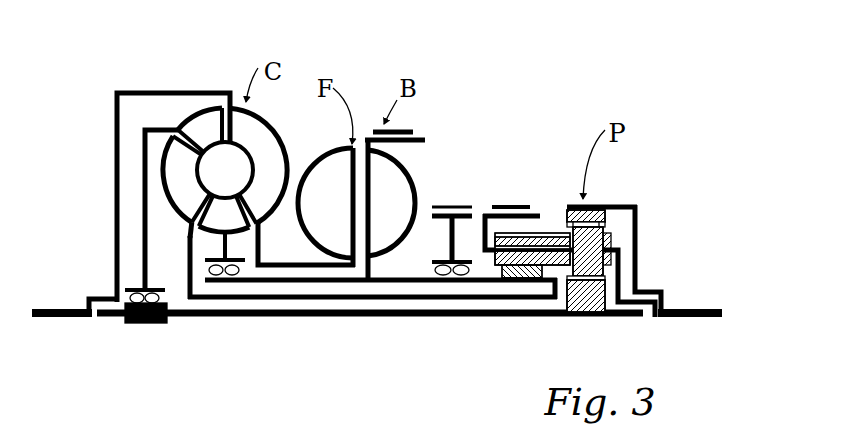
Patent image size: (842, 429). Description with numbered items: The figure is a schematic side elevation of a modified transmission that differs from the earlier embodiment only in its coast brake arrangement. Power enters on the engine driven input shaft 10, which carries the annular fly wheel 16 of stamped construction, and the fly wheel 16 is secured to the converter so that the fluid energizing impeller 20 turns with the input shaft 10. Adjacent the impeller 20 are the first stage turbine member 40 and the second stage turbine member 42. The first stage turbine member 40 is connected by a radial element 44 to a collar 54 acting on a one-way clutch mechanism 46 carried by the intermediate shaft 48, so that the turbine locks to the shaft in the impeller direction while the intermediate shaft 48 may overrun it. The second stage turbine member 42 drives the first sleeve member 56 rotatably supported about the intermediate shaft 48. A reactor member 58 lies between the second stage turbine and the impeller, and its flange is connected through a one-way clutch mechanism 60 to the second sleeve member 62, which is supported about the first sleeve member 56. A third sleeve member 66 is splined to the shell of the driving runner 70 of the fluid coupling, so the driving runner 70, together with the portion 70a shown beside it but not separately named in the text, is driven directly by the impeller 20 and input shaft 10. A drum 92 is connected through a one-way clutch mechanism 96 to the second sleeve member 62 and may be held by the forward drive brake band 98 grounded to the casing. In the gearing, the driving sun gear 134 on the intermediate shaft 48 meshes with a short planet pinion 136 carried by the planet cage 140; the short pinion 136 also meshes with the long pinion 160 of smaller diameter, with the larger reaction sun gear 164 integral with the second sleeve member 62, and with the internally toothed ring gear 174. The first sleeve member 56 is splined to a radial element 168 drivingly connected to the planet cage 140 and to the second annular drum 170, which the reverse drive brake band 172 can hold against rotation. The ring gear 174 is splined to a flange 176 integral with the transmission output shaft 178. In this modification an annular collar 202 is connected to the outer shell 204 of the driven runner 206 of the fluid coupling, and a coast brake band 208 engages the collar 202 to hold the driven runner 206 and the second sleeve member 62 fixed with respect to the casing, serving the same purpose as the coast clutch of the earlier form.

The input shaft 10 is at (65, 312).
The fly wheel 16 is at (113, 153).
The impeller 20 is at (268, 134).
The first stage turbine member 40 is at (185, 119).
The second stage turbine member 42 is at (183, 203).
The radial element 44 is at (143, 181).
The one-way clutch mechanism 46 is at (154, 298).
The intermediate shaft 48 is at (167, 320).
The collar 54 is at (187, 252).
The first sleeve member 56 is at (240, 298).
The reactor member 58 is at (188, 228).
The one-way clutch mechanism 60 is at (240, 263).
The second sleeve member 62 is at (282, 277).
The third sleeve member 66 is at (298, 263).
The driving runner 70 is at (328, 163).
The wall 70a is at (350, 257).
The drum 92 is at (472, 215).
The one-way clutch mechanism 96 is at (437, 268).
The forward drive brake band 98 is at (447, 206).
The driving sun gear 134 is at (595, 305).
The short planet pinion 136 is at (600, 232).
The planet cage 140 is at (610, 271).
The long pinion 160 is at (608, 245).
The reaction sun gear 164 is at (530, 282).
The radial element 168 is at (483, 241).
The second annular drum 170 is at (540, 215).
The reverse drive brake band 172 is at (505, 206).
The ring gear 174 is at (605, 210).
The flange 176 is at (640, 285).
The transmission output shaft 178 is at (700, 313).
The annular collar 202 is at (425, 141).
The outer shell 204 is at (405, 179).
The driven runner 206 is at (405, 167).
The coast brake band 208 is at (398, 130).